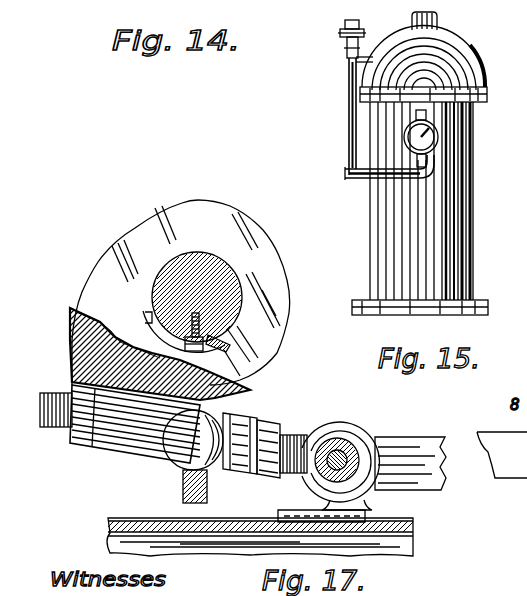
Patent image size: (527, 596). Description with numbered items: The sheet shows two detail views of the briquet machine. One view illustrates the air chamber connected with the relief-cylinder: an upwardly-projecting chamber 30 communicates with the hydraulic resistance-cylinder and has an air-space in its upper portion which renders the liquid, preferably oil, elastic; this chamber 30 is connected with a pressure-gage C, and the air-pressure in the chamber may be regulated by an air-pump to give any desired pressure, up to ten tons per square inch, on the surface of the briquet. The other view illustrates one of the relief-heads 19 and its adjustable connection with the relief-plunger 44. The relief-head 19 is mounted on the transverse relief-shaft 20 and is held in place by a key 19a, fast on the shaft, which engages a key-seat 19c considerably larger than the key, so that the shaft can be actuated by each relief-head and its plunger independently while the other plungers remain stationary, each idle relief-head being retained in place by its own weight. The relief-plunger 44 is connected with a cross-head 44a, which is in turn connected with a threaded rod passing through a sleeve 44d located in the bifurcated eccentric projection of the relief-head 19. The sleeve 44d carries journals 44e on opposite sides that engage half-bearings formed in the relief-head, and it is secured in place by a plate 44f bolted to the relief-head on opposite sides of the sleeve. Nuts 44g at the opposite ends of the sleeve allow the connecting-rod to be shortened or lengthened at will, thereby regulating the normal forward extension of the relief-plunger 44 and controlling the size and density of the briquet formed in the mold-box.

In FIG. 15, the pressure-gage C is at (428, 138).
In FIG. 15, the chamber 30 is at (420, 163).
In FIG. 17, the relief-head 19 is at (218, 210).
In FIG. 17, the relief-shaft 20 is at (162, 267).
In FIG. 17, the key-seat 19c is at (145, 318).
In FIG. 17, the key 19a is at (203, 353).
In FIG. 17, the relief-plunger 44 is at (412, 442).
In FIG. 17, the cross-head 44a is at (313, 435).
In FIG. 17, the sleeve 44d is at (112, 457).
In FIG. 17, the journals 44e is at (225, 415).
In FIG. 17, the plate 44f is at (205, 480).
In FIG. 17, the nuts 44g is at (282, 417).